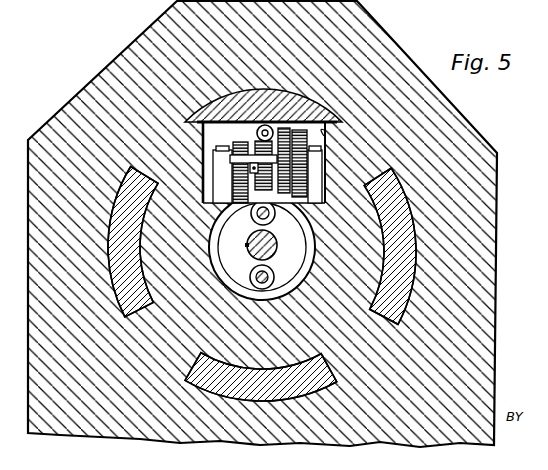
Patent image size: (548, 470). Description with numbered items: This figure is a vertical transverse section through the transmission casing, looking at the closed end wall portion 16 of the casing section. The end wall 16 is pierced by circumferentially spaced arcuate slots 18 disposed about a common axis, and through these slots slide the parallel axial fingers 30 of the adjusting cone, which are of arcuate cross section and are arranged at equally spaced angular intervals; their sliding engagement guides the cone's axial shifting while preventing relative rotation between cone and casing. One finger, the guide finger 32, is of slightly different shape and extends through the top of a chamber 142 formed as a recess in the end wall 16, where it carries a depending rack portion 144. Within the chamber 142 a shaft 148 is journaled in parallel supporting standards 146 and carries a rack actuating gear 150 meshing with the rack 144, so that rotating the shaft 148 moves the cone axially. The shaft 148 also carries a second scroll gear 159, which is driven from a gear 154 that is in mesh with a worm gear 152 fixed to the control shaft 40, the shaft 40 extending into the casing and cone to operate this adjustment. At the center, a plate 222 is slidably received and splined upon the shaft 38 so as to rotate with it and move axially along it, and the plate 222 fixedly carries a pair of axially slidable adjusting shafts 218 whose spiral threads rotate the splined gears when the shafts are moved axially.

The closed end wall portion 16 is at (484, 201).
The arcuate slots 18 is at (146, 228).
The fingers 30 is at (121, 216).
The guide finger 32 is at (265, 88).
The shaft 38 is at (277, 242).
The control shaft 40 is at (266, 124).
The chamber 142 is at (326, 134).
The rack portion 144 is at (203, 126).
The supporting standards 146 is at (222, 172).
The shaft 148 is at (253, 143).
The rack actuating gear 150 is at (307, 122).
The worm gear 152 is at (264, 128).
The gear 154 is at (226, 205).
The second scroll gear 159 is at (290, 122).
The adjusting shafts 218 is at (256, 215).
The plate 222 is at (230, 257).